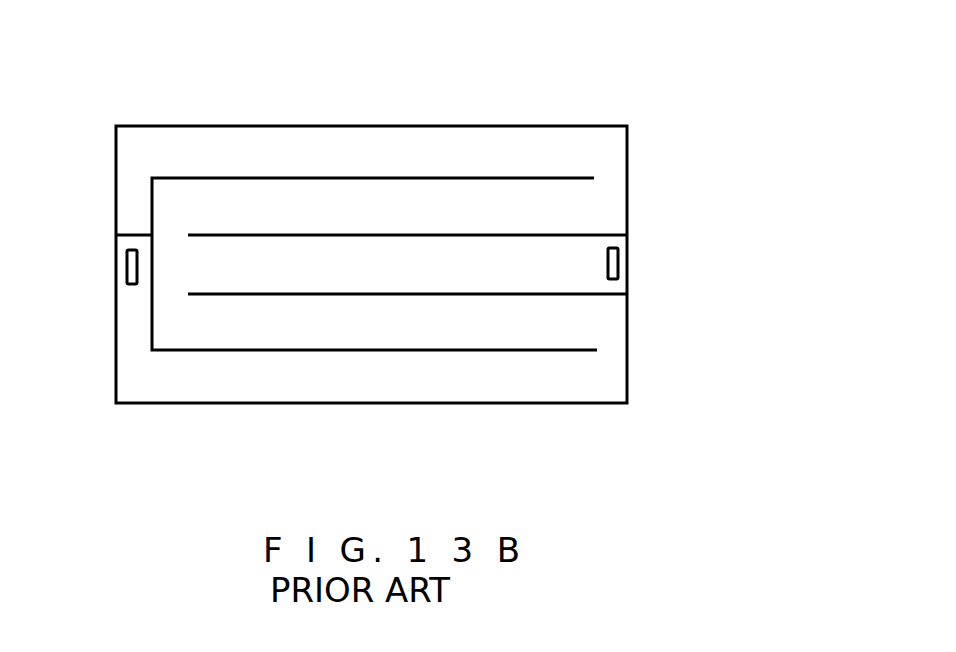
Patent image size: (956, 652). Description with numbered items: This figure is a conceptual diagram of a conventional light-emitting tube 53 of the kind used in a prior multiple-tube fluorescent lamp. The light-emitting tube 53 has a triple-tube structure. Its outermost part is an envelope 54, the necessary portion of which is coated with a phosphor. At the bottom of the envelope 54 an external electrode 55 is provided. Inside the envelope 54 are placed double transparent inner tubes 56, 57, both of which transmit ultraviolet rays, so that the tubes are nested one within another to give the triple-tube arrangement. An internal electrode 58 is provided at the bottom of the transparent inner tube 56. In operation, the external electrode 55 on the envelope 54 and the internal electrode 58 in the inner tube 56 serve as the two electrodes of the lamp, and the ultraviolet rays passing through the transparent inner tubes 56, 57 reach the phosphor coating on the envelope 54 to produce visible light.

The light-emitting tube 53 is at (431, 107).
The envelope 54 is at (545, 125).
The external electrode 55 is at (127, 262).
The transparent inner tube 56 is at (312, 294).
The transparent inner tube 57 is at (402, 350).
The internal electrode 58 is at (618, 260).